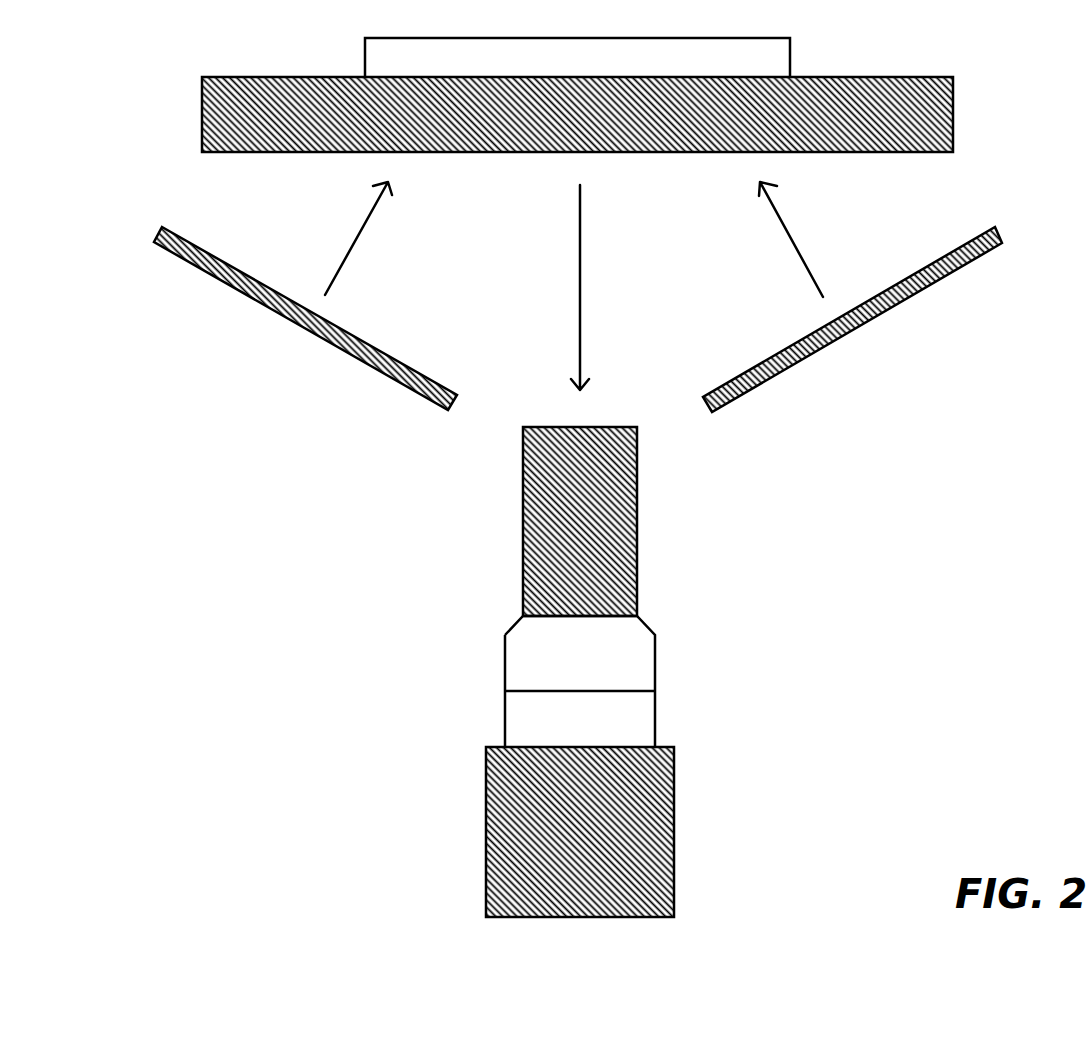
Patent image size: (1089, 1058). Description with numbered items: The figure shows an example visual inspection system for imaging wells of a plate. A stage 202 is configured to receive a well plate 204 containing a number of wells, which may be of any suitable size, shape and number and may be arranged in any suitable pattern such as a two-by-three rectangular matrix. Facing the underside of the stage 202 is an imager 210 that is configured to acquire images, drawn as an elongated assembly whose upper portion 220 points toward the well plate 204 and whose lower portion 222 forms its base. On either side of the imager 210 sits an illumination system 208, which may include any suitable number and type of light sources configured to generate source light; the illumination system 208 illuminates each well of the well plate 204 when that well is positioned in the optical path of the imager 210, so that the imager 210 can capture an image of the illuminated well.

The stage 202 is at (955, 92).
The well plate 204 is at (792, 48).
The illumination system 208 is at (203, 275).
The imager 210 is at (710, 560).
The light emitting element / lamp 220 is at (522, 492).
The base / housing 222 is at (483, 812).